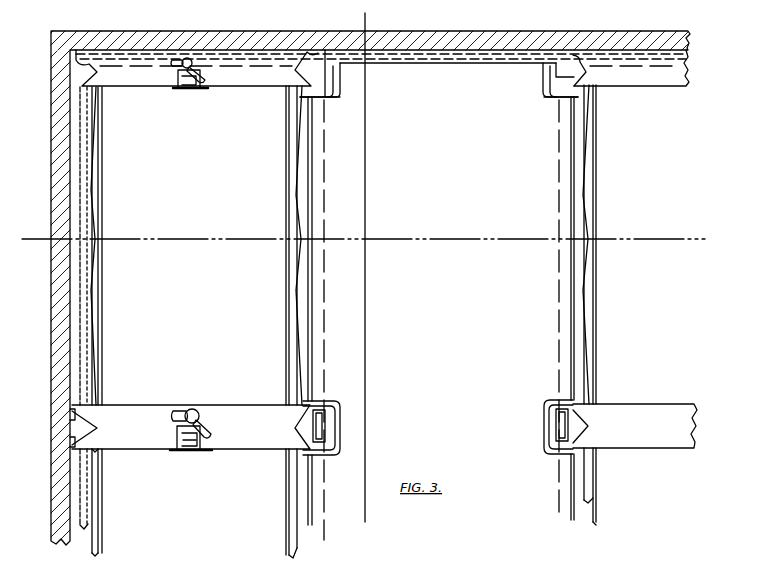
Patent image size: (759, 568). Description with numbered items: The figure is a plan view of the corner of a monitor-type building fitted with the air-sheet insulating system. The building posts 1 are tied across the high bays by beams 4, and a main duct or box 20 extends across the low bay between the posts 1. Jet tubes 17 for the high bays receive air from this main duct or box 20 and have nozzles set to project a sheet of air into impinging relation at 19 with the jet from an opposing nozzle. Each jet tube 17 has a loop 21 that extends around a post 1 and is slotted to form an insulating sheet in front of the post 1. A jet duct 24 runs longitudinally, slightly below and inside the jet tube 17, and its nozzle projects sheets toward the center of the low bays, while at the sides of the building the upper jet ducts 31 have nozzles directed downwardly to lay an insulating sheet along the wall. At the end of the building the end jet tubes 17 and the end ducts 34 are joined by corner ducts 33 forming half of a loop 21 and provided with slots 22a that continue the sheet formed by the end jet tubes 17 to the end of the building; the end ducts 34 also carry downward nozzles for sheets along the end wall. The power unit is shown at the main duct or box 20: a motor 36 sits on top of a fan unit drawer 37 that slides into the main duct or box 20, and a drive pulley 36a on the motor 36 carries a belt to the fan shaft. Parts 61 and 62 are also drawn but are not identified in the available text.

The post 1 is at (324, 426).
The beam 4 is at (358, 242).
The jet tube 17 is at (309, 203).
The impinging point 19 is at (367, 289).
The main duct or box 20 is at (220, 412).
The loop 21 is at (340, 403).
The slot 22a is at (342, 84).
The jet duct 24 is at (100, 212).
The upper jet duct 31 is at (80, 170).
The corner duct 33 is at (332, 99).
The end duct 34 is at (412, 63).
The motor 36 is at (185, 89).
The drive pulley 36a is at (191, 452).
The fan unit drawer 37 is at (204, 90).
The pivot ball 61 is at (184, 68).
The lever arm 62 is at (178, 66).